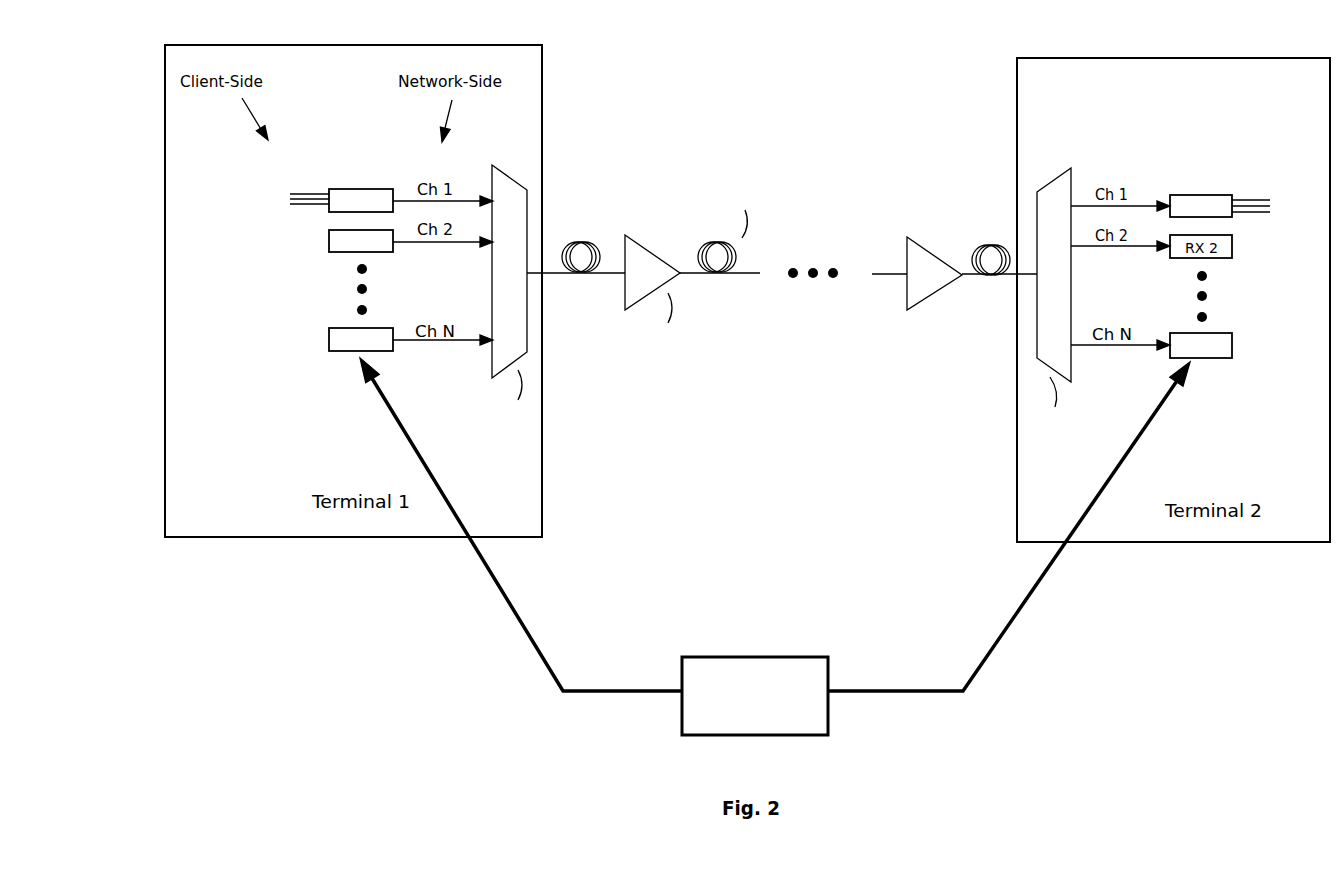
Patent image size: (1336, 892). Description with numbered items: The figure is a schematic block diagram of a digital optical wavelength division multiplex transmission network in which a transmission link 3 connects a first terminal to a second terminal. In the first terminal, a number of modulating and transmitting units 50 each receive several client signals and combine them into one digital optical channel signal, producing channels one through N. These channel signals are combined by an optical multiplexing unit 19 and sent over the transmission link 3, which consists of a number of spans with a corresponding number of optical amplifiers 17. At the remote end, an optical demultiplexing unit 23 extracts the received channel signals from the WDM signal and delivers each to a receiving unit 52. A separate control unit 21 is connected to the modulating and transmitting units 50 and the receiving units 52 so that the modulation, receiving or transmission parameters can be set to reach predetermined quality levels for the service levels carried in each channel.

The transmission link 3 is at (807, 333).
The optical amplifier 17 is at (632, 252).
The optical multiplexing unit 19 is at (492, 177).
The control unit 21 is at (752, 667).
The optical demultiplexing unit 23 is at (1050, 192).
The modulating and transmitting unit 50 is at (342, 197).
The receiving unit 52 is at (1223, 202).